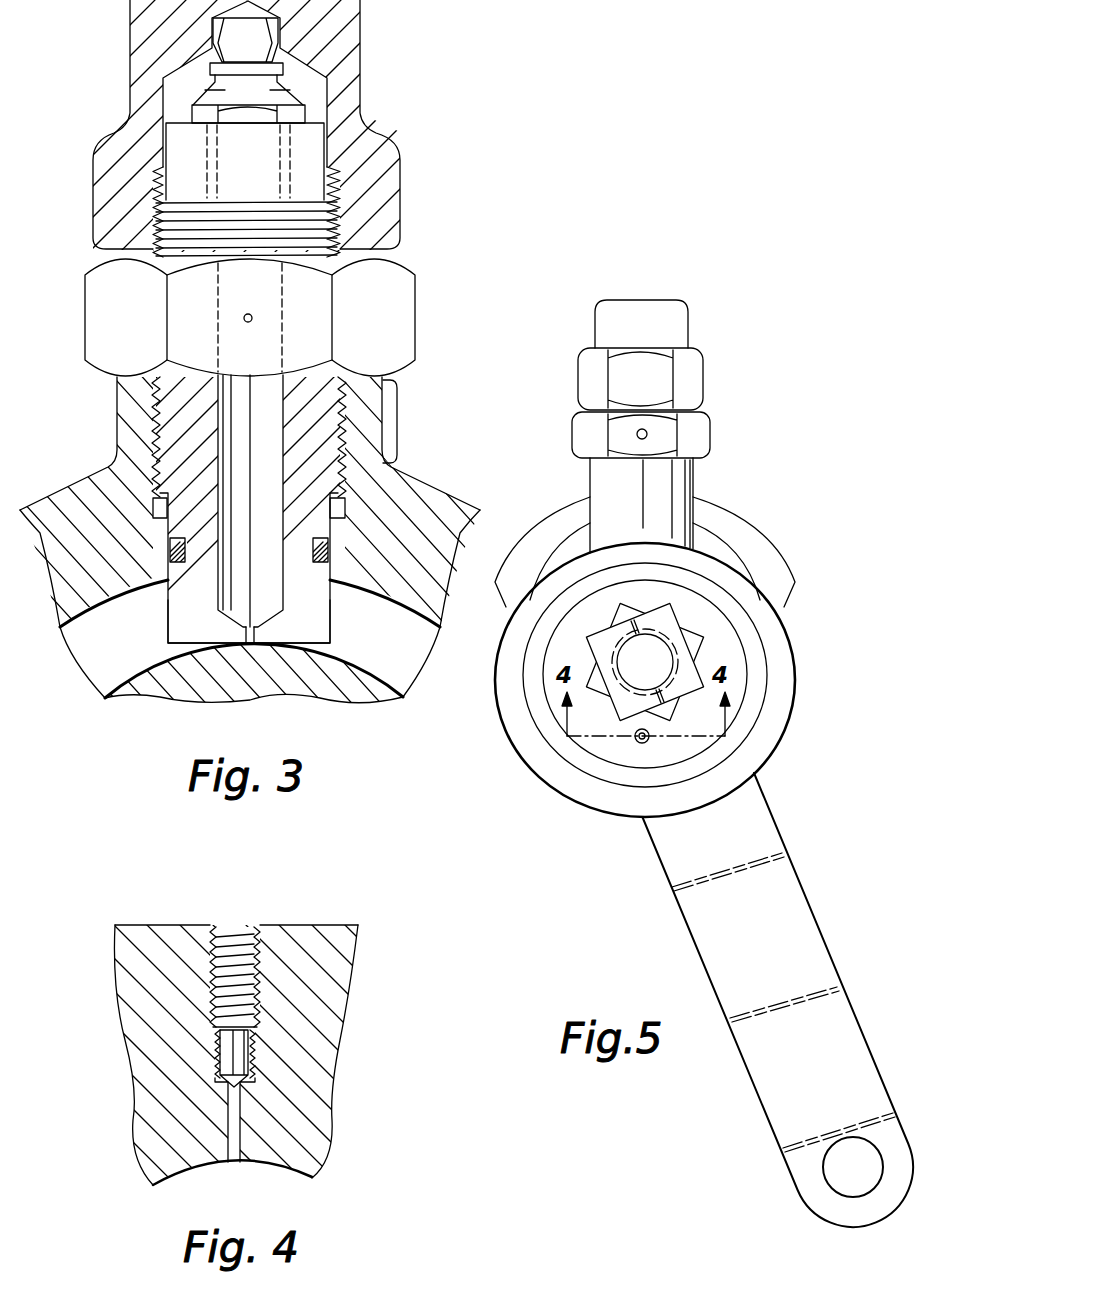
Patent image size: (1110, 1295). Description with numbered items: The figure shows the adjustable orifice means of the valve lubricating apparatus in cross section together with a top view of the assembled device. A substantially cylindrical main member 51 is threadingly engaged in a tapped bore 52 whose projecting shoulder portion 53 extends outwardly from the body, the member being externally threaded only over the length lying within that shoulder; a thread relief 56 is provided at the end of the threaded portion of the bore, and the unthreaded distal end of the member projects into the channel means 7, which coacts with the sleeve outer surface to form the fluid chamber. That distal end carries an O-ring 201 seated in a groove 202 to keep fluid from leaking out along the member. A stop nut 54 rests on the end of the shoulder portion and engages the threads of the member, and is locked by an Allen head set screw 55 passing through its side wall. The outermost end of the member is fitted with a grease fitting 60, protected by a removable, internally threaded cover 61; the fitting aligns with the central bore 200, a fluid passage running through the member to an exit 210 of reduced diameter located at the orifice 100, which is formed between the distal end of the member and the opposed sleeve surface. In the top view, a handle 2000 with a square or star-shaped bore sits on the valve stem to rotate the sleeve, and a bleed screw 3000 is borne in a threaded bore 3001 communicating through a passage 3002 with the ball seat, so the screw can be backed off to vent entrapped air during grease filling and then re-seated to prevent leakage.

In FIG. 3, the cover 61 is at (345, 33).
In FIG. 5, the cover 61 is at (673, 333).
In FIG. 3, the grease fitting 60 is at (316, 113).
In FIG. 3, the stop nut 54 is at (397, 348).
In FIG. 5, the stop nut 54 is at (702, 447).
In FIG. 3, the set screw 55 is at (252, 318).
In FIG. 5, the set screw 55 is at (647, 434).
In FIG. 3, the projecting shoulder portion 53 is at (397, 423).
In FIG. 5, the projecting shoulder portion 53 is at (663, 493).
In FIG. 3, the tapped bore 52 is at (155, 428).
In FIG. 3, the thread relief 56 is at (158, 528).
In FIG. 3, the O-ring 201 is at (345, 500).
In FIG. 3, the groove 202 is at (322, 563).
In FIG. 3, the central bore 200 is at (263, 413).
In FIG. 3, the exit 210 is at (250, 643).
In FIG. 3, the orifice 100 is at (207, 643).
In FIG. 3, the main member 51 is at (320, 627).
In FIG. 3, the channel means 7 is at (136, 649).
In FIG. 5, the bleed screw 3000 is at (637, 742).
In FIG. 4, the bleed screw 3000 is at (240, 1060).
In FIG. 4, the threaded bore 3001 is at (233, 963).
In FIG. 4, the passage 3002 is at (237, 1137).
In FIG. 5, the handle 2000 is at (898, 894).